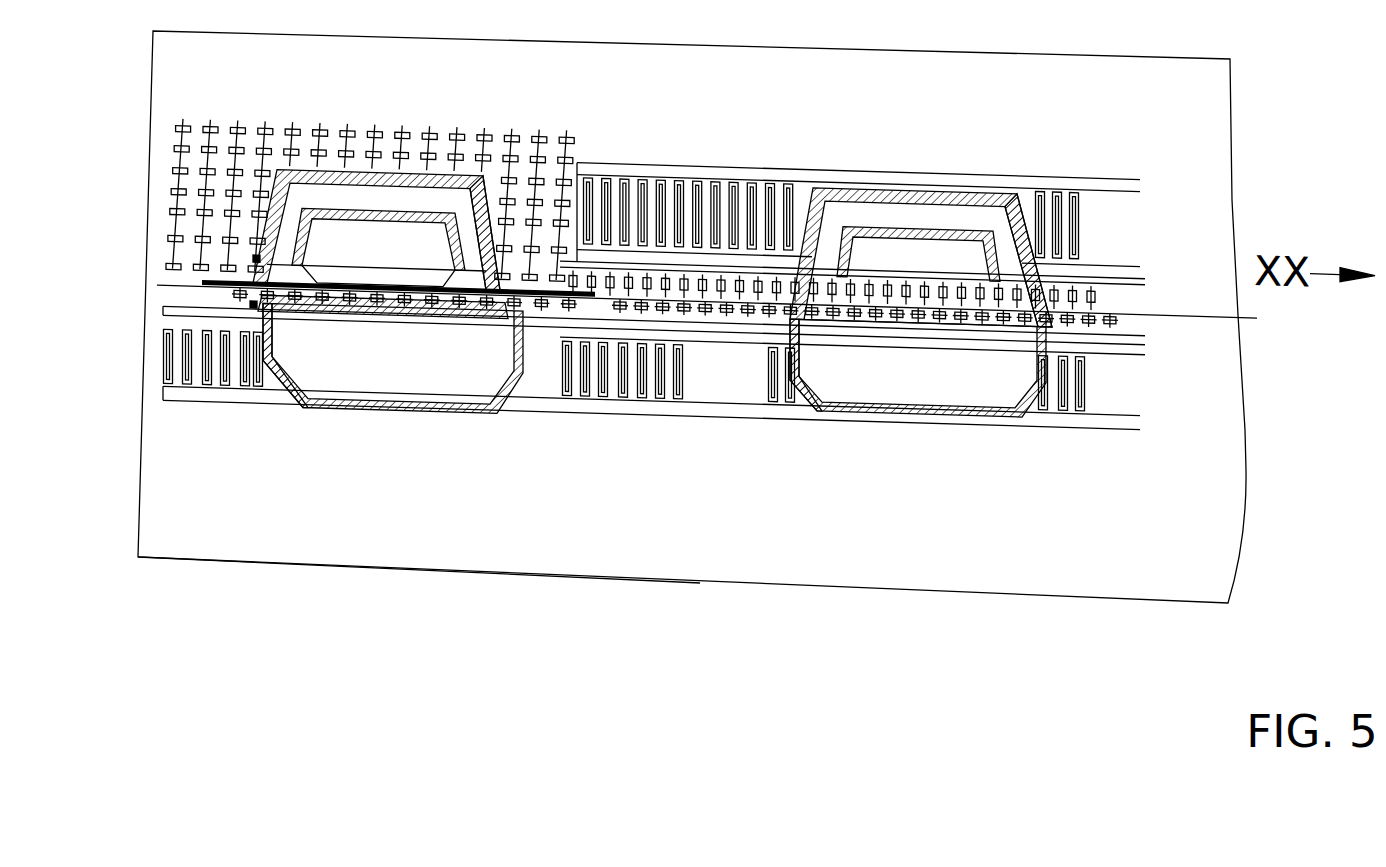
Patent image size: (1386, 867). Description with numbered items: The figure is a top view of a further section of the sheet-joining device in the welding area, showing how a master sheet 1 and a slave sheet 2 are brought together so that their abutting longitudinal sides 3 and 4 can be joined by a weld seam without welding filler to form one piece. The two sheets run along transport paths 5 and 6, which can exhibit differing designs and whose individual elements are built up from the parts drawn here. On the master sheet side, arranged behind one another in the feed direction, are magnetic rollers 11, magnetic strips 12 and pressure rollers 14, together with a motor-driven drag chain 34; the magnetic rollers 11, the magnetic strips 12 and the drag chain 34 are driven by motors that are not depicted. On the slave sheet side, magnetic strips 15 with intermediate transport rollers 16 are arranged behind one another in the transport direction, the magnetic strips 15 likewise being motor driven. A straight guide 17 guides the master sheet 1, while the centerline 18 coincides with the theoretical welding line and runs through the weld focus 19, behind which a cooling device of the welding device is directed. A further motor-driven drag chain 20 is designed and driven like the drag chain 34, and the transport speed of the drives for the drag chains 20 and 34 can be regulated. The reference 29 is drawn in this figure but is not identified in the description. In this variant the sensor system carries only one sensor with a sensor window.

The master sheet 1 is at (342, 186).
The slave sheet 2 is at (403, 362).
The longitudinal side of master sheet 3 is at (478, 282).
The longitudinal side of slave sheet 4 is at (475, 302).
The transport path 5 is at (1215, 160).
The transport path 6 is at (1200, 520).
The magnetic rollers 11 is at (187, 126).
The magnetic strips 12 is at (792, 243).
The pressure rollers 14 is at (807, 280).
The magnetic strips 15 is at (175, 322).
The transport rollers 16 is at (245, 374).
The straight guide 17 is at (347, 281).
The centerline 18 is at (1155, 283).
The weld focus 19 is at (1077, 170).
The drag chain 20 is at (252, 302).
The contact 29 is at (995, 265).
The drag chain 34 is at (255, 255).